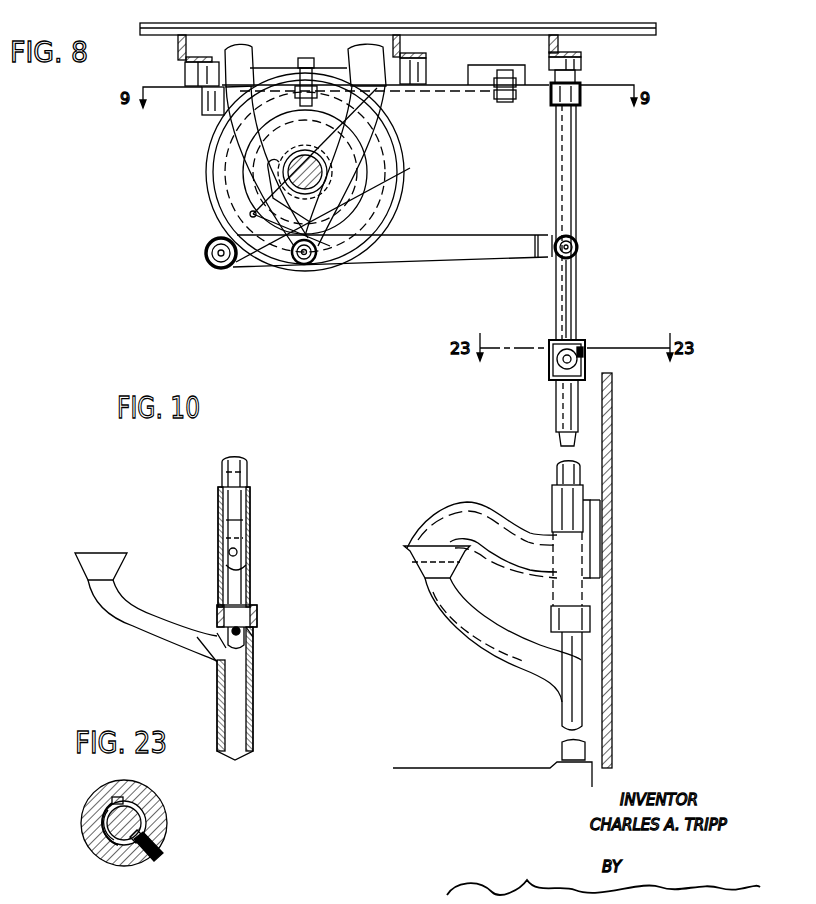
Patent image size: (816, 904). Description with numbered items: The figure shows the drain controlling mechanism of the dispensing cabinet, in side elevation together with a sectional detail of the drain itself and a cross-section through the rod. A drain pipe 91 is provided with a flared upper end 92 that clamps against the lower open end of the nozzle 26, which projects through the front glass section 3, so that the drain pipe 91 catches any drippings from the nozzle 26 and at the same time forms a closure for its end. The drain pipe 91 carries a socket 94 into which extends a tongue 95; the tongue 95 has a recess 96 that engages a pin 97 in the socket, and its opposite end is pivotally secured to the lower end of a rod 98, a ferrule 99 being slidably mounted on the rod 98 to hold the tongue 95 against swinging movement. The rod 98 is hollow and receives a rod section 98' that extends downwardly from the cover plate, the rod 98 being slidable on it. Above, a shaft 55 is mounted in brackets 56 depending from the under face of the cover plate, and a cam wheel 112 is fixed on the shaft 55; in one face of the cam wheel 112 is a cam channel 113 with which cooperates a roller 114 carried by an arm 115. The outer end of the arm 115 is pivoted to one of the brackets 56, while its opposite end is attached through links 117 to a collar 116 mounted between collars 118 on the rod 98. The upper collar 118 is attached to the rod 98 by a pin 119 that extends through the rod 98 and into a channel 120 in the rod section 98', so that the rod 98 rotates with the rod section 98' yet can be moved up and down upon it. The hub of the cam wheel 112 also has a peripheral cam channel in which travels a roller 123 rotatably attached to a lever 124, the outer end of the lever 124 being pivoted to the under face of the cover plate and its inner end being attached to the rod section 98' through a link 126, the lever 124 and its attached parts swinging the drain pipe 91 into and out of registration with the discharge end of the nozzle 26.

In FIG. 8, the glass section 3 is at (613, 447).
In FIG. 8, the nozzle 26 is at (470, 512).
In FIG. 8, the shaft 55 is at (320, 172).
In FIG. 8, the bracket 56 is at (225, 215).
In FIG. 8, the drain pipe 91 is at (478, 613).
In FIG. 10, the drain pipe 91 is at (135, 613).
In FIG. 8, the flared upper end 92 is at (410, 553).
In FIG. 10, the flared upper end 92 is at (85, 572).
In FIG. 8, the socket 94 is at (590, 619).
In FIG. 10, the socket 94 is at (260, 613).
In FIG. 10, the tongue 95 is at (246, 635).
In FIG. 10, the recess 96 is at (212, 650).
In FIG. 10, the pin 97 is at (252, 660).
In FIG. 8, the rod 98 is at (544, 413).
In FIG. 10, the rod 98 is at (258, 468).
In FIG. 23, the rod 98 is at (93, 823).
In FIG. 8, the rod section 98' is at (579, 211).
In FIG. 23, the rod section 98' is at (80, 815).
In FIG. 8, the ferrule 99 is at (584, 495).
In FIG. 10, the ferrule 99 is at (252, 523).
In FIG. 8, the cam wheel 112 is at (378, 190).
In FIG. 8, the cam channel 113 is at (382, 136).
In FIG. 8, the roller 114 is at (300, 264).
In FIG. 8, the arm 115 is at (402, 265).
In FIG. 8, the collar 116 is at (550, 364).
In FIG. 8, the link 117 is at (562, 322).
In FIG. 8, the collar 118 is at (578, 346).
In FIG. 23, the collar 118 is at (168, 817).
In FIG. 8, the pin 119 is at (583, 353).
In FIG. 23, the pin 119 is at (163, 856).
In FIG. 23, the channel 120 is at (150, 816).
In FIG. 8, the roller 123 is at (320, 100).
In FIG. 8, the lever 124 is at (448, 88).
In FIG. 8, the link 126 is at (532, 90).